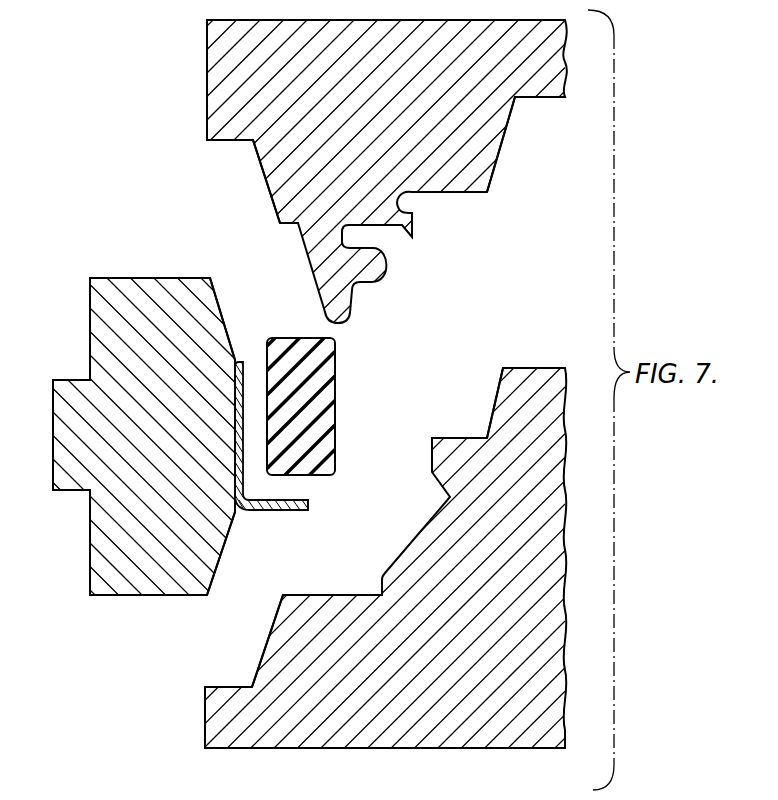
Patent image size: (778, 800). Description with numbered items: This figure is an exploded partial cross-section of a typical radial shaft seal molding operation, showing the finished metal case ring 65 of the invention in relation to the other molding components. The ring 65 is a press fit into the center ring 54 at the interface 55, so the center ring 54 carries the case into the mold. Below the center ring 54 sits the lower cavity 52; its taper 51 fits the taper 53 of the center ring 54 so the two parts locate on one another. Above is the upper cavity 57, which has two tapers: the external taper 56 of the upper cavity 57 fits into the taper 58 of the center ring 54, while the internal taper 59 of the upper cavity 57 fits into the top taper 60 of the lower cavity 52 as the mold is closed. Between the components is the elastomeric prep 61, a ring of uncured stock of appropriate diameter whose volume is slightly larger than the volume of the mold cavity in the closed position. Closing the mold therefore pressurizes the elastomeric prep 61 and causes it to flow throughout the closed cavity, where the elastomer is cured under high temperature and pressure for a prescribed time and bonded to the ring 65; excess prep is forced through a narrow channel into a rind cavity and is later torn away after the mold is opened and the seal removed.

The taper 51 is at (270, 633).
The lower cavity 52 is at (540, 632).
The taper 53 is at (222, 553).
The center ring 54 is at (102, 523).
The interface 55 is at (232, 403).
The external taper 56 is at (267, 183).
The upper cavity 57 is at (227, 80).
The taper 58 is at (226, 331).
The internal taper 59 is at (498, 148).
The top taper 60 is at (494, 400).
The elastomeric prep 61 is at (337, 380).
The ring 65 is at (270, 511).